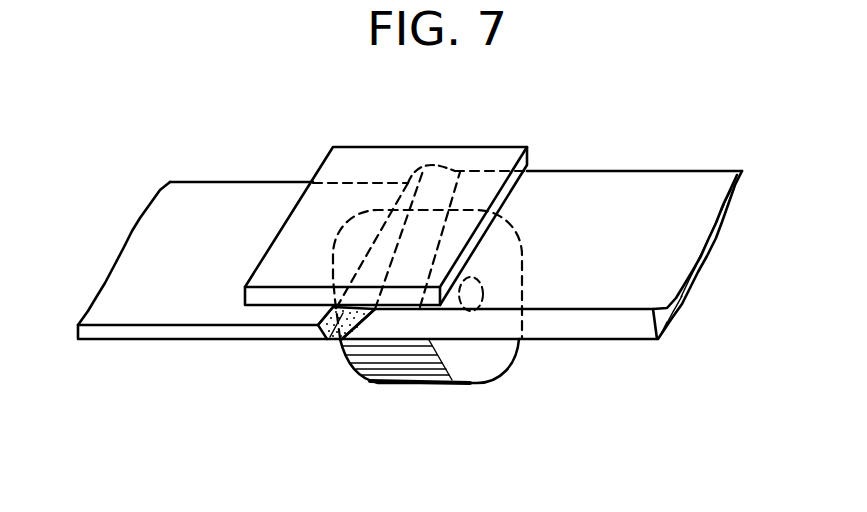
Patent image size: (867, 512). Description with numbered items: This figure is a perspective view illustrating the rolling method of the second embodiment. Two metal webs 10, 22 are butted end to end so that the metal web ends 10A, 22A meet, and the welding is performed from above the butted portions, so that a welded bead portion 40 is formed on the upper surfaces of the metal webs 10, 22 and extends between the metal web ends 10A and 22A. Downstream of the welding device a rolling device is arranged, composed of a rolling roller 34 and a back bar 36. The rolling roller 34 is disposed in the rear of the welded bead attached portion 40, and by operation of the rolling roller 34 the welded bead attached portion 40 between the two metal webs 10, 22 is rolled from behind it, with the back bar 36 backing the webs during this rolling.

The metal web 10 is at (245, 193).
The metal web end 10A is at (318, 338).
The metal web 22 is at (625, 182).
The metal web end 22A is at (365, 330).
The rolling roller 34 is at (373, 362).
The back bar 36 is at (399, 163).
The welded bead portion 40 is at (333, 340).